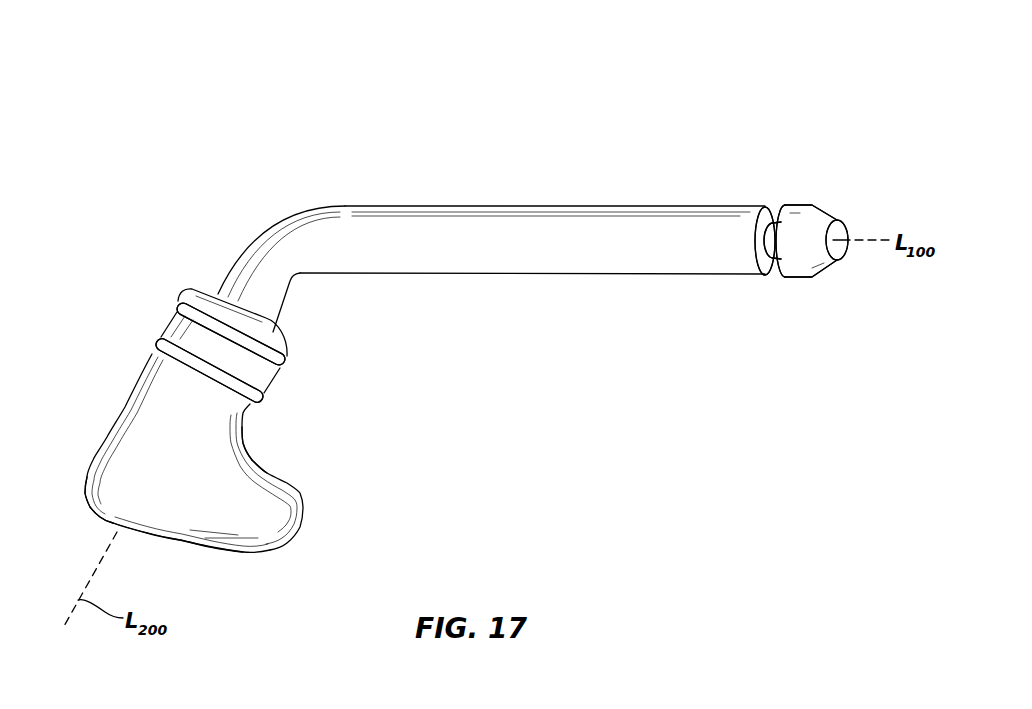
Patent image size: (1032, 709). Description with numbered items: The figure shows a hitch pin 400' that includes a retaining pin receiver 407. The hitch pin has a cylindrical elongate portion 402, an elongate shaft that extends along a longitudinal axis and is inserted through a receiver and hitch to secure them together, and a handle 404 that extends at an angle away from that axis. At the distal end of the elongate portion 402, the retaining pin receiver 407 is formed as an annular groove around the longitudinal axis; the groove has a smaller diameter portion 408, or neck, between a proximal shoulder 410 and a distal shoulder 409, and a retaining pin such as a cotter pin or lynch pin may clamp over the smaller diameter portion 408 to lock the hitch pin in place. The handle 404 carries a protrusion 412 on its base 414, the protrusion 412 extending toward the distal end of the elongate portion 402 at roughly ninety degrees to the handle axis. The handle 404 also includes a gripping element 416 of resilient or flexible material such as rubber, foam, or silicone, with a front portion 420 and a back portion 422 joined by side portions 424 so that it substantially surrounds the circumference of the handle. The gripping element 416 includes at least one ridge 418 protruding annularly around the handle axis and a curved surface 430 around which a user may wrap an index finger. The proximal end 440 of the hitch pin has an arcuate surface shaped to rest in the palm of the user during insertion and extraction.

The hitch pin 400' is at (236, 72).
The elongate portion 402 is at (553, 228).
The handle 404 is at (228, 268).
The retaining pin receiver 407 is at (782, 188).
The smaller diameter portion 408 is at (772, 243).
The distal shoulder 409 is at (780, 270).
The proximal shoulder 410 is at (760, 264).
The protrusion 412 is at (273, 482).
The base 414 is at (117, 522).
The gripping element 416 is at (167, 393).
The ridge 418 is at (174, 302).
The front portion 420 is at (290, 352).
The back portion 422 is at (198, 293).
The side portions 424 is at (244, 306).
The curved surface 430 is at (253, 457).
The proximal end 440 is at (217, 552).